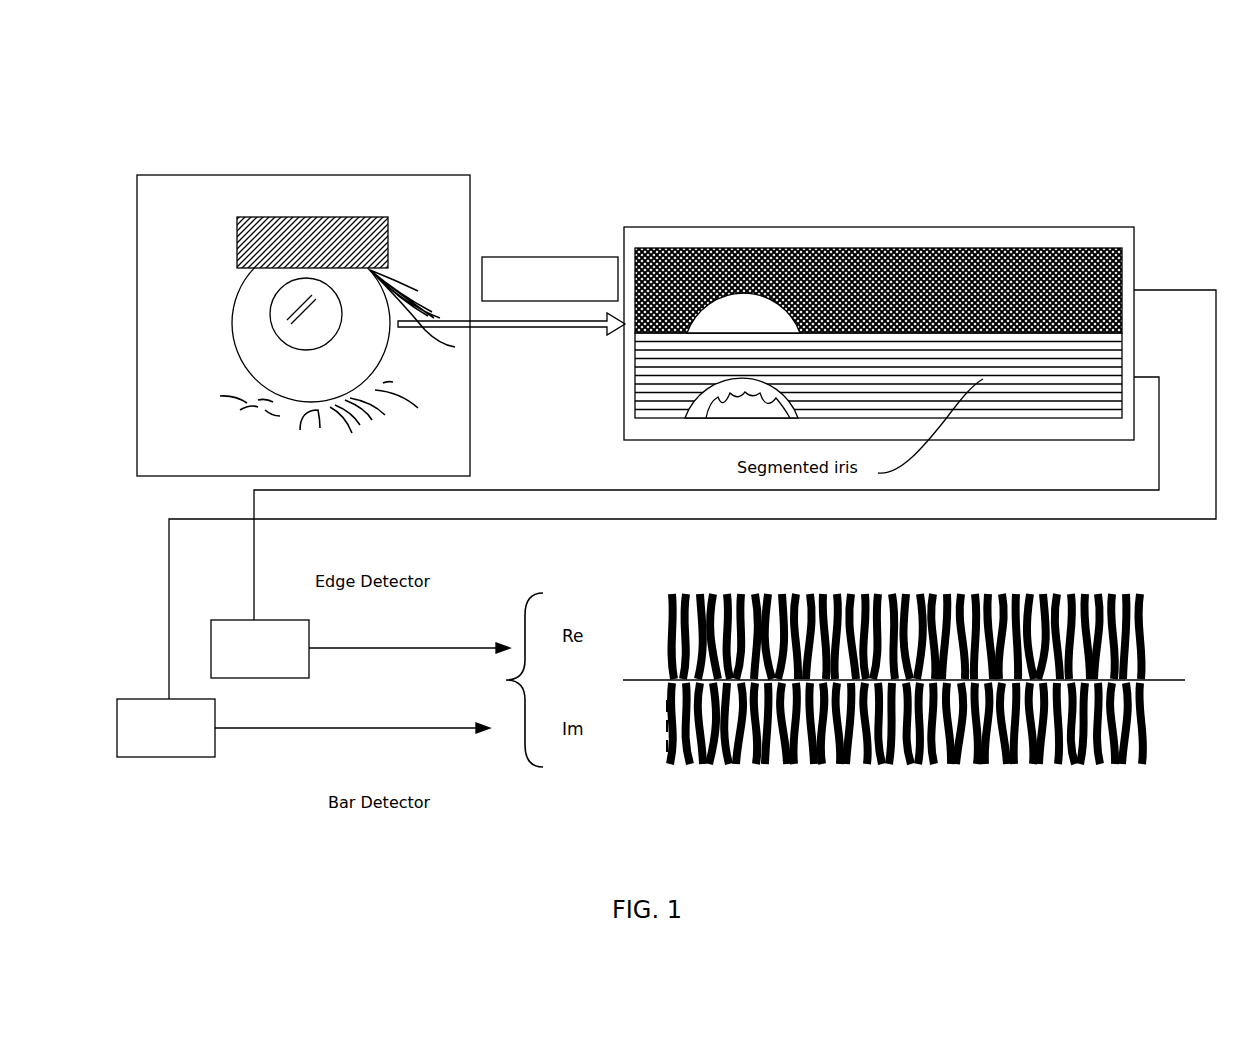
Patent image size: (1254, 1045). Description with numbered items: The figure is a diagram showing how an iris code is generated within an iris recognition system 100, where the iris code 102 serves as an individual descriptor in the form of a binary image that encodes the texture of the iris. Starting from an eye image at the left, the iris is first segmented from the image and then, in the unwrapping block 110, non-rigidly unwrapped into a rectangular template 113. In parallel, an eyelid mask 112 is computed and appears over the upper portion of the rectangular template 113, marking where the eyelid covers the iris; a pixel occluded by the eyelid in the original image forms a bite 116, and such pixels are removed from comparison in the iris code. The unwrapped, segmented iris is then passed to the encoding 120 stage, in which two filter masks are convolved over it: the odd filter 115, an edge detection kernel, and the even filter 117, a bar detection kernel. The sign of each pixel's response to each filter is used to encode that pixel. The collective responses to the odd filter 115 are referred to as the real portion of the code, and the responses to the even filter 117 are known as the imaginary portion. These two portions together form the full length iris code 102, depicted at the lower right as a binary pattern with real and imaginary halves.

The iris recognition system 100 is at (580, 98).
The iris code 102 is at (827, 767).
The unwrapping block 110 is at (577, 257).
The eyelid mask 112 is at (332, 217).
The rectangular template 113 is at (1023, 213).
The odd filter 115 is at (263, 679).
The bite 116 is at (697, 310).
The even filter 117 is at (159, 758).
The encoding 120 is at (590, 519).